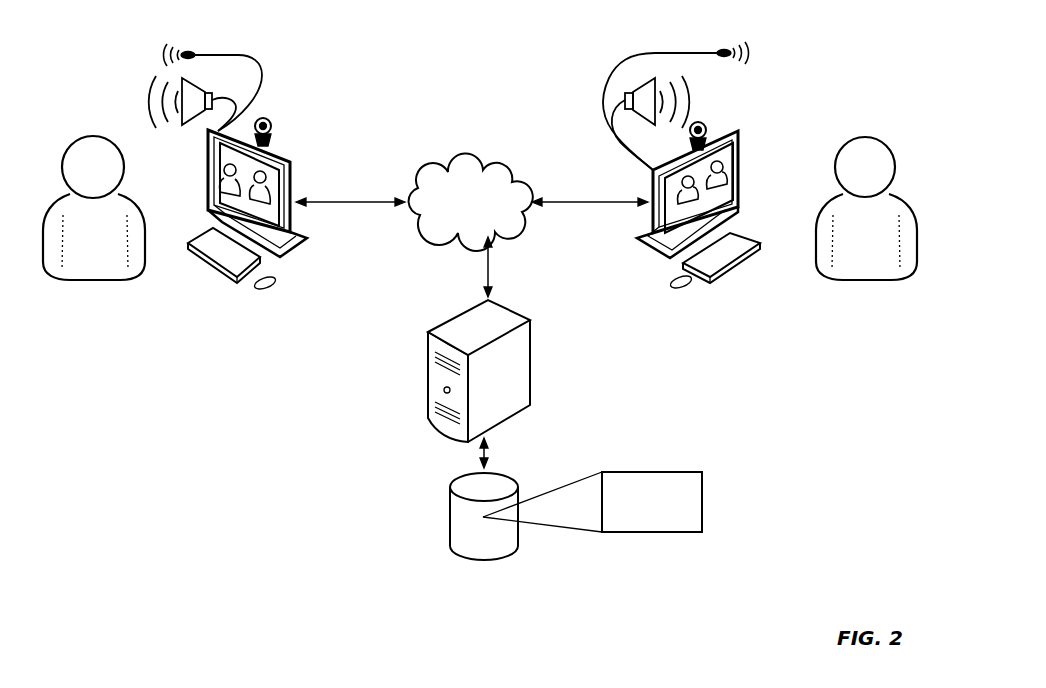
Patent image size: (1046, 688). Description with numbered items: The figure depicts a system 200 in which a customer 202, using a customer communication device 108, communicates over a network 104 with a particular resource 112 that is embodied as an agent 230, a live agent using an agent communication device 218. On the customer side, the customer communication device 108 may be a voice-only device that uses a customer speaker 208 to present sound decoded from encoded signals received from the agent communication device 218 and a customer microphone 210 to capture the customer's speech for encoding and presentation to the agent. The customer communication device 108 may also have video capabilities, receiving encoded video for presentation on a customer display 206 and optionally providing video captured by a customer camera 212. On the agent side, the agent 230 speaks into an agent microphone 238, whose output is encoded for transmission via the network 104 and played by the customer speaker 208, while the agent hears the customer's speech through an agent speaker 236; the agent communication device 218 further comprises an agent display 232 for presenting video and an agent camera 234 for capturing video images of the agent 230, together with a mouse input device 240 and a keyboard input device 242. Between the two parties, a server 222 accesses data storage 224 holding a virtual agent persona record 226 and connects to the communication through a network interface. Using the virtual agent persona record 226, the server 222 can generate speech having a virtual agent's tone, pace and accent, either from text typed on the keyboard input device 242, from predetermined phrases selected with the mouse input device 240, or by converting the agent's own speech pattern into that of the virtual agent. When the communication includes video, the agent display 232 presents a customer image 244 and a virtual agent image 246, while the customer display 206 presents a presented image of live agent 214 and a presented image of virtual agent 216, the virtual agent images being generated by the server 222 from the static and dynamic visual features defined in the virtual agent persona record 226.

The system 200 is at (880, 38).
The network 104 is at (487, 170).
The customer communication device 108 is at (192, 375).
The resource 112 is at (870, 347).
The customer 202 is at (90, 280).
The customer display 206 is at (292, 165).
The customer speaker 208 is at (208, 91).
The customer microphone 210 is at (223, 53).
The customer camera 212 is at (272, 124).
The presented image of live agent 214 is at (231, 197).
The presented image of virtual agent 216 is at (261, 205).
The agent communication device 218 is at (767, 357).
The server 222 is at (530, 355).
The data storage 224 is at (503, 478).
The virtual agent persona record 226 is at (702, 483).
The agent 230 is at (902, 200).
The agent display 232 is at (743, 157).
The agent camera 234 is at (703, 122).
The agent speaker 236 is at (650, 78).
The agent microphone 238 is at (685, 53).
The mouse input device 240 is at (681, 288).
The keyboard input device 242 is at (719, 192).
The customer image 244 is at (690, 206).
The virtual agent image 246 is at (724, 198).